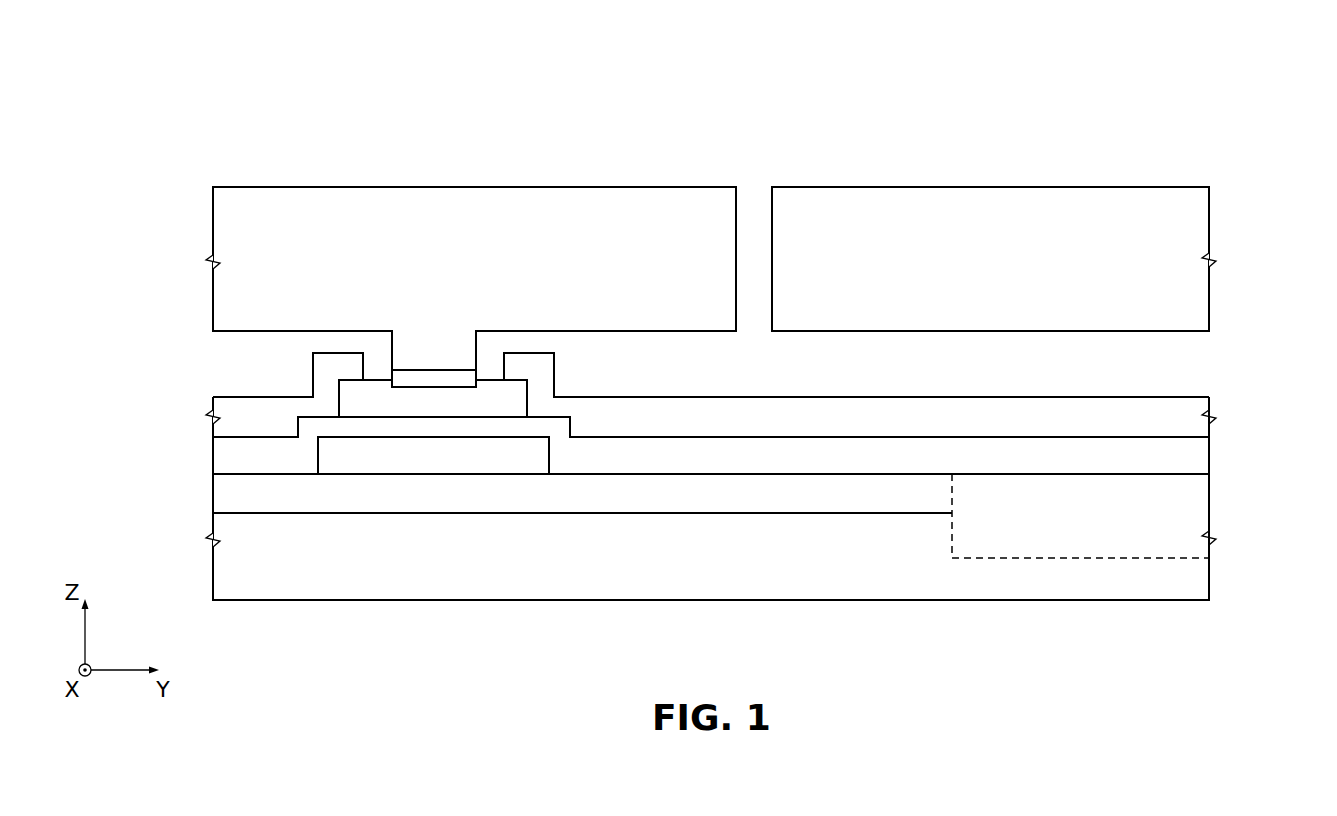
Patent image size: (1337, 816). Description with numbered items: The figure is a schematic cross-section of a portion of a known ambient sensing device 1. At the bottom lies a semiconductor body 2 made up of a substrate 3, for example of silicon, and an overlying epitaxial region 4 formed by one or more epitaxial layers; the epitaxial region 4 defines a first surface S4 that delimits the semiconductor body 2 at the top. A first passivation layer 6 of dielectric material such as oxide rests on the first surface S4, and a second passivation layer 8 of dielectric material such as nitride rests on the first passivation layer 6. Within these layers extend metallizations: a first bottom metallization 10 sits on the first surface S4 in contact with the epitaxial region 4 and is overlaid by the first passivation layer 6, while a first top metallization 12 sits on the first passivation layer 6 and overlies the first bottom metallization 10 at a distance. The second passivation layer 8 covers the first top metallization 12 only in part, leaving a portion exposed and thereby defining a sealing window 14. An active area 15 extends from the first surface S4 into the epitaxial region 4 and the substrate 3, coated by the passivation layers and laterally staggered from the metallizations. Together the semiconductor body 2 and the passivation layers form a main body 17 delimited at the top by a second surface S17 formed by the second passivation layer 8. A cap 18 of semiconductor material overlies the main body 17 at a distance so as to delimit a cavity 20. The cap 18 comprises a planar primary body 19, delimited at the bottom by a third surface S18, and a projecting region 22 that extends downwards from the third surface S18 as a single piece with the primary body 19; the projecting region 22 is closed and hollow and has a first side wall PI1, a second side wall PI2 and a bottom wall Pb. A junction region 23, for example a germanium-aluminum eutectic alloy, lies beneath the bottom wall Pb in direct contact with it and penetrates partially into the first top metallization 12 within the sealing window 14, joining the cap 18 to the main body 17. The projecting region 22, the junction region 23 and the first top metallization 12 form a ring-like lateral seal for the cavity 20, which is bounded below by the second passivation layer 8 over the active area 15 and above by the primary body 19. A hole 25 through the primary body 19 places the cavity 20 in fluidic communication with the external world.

The sensing device 1 is at (1160, 103).
The semiconductor body 2 is at (190, 596).
The substrate 3 is at (223, 562).
The epitaxial region 4 is at (230, 498).
The first passivation layer 6 is at (222, 447).
The second passivation layer 8 is at (235, 407).
The first bottom metallization 10 is at (410, 467).
The first top metallization 12 is at (487, 411).
The sealing window 14 is at (506, 347).
The active area 15 is at (1193, 568).
The main body 17 is at (1245, 453).
The cap 18 is at (470, 168).
The primary body 19 is at (647, 193).
The cavity 20 is at (958, 358).
The projecting region 22 is at (412, 352).
The junction region 23 is at (462, 377).
The hole 25 is at (755, 185).
The first surface S4 is at (248, 466).
The second surface S17 is at (1198, 385).
The third surface S18 is at (724, 347).
The bottom wall Pb is at (437, 362).
The first side wall PI1 is at (487, 340).
The second side wall PI2 is at (378, 340).